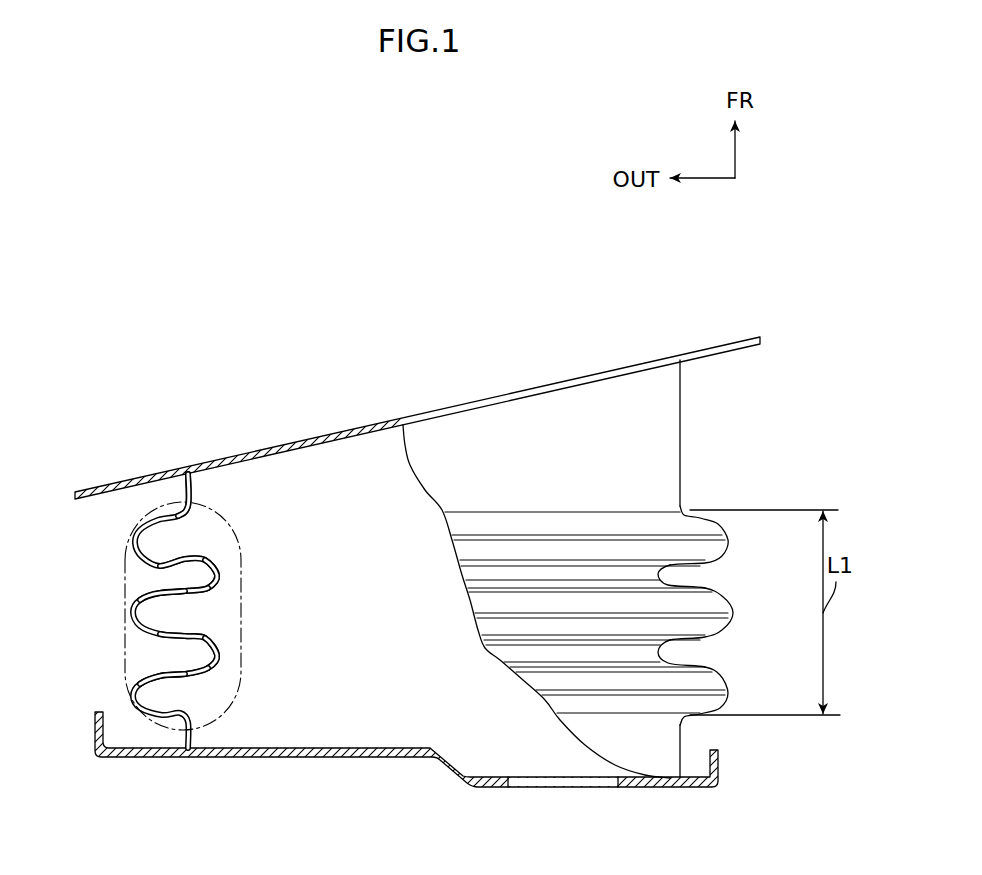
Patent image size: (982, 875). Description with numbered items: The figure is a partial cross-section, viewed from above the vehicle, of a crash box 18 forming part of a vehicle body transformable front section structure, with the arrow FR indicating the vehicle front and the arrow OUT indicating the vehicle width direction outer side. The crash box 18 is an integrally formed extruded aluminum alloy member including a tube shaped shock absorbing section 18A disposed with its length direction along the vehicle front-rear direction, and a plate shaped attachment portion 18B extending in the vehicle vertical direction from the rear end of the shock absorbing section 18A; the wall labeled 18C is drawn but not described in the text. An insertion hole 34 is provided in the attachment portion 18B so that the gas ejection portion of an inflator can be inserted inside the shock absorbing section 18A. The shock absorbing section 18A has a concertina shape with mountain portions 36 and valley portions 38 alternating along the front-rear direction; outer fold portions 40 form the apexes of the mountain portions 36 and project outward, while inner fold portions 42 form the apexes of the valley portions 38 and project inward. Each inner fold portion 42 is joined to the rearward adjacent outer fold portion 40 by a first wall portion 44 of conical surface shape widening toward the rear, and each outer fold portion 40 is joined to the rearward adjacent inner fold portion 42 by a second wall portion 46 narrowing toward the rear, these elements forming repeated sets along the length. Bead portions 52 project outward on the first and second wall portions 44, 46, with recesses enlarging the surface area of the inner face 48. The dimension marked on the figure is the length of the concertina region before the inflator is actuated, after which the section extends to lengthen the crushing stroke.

The crash box 18 is at (136, 455).
The shock absorbing section 18A is at (684, 420).
The attachment portion 18B is at (677, 790).
The duct upper wall 18C is at (568, 380).
The insertion hole 34 is at (527, 788).
The mountain portion 36 is at (728, 522).
The valley portion 38 is at (661, 574).
The outer fold portion 40 is at (133, 536).
The inner fold portion 42 is at (220, 579).
The first wall portion 44 is at (193, 598).
The second wall portion 46 is at (197, 556).
The inner face 48 is at (191, 492).
The bead portion 52 is at (165, 576).